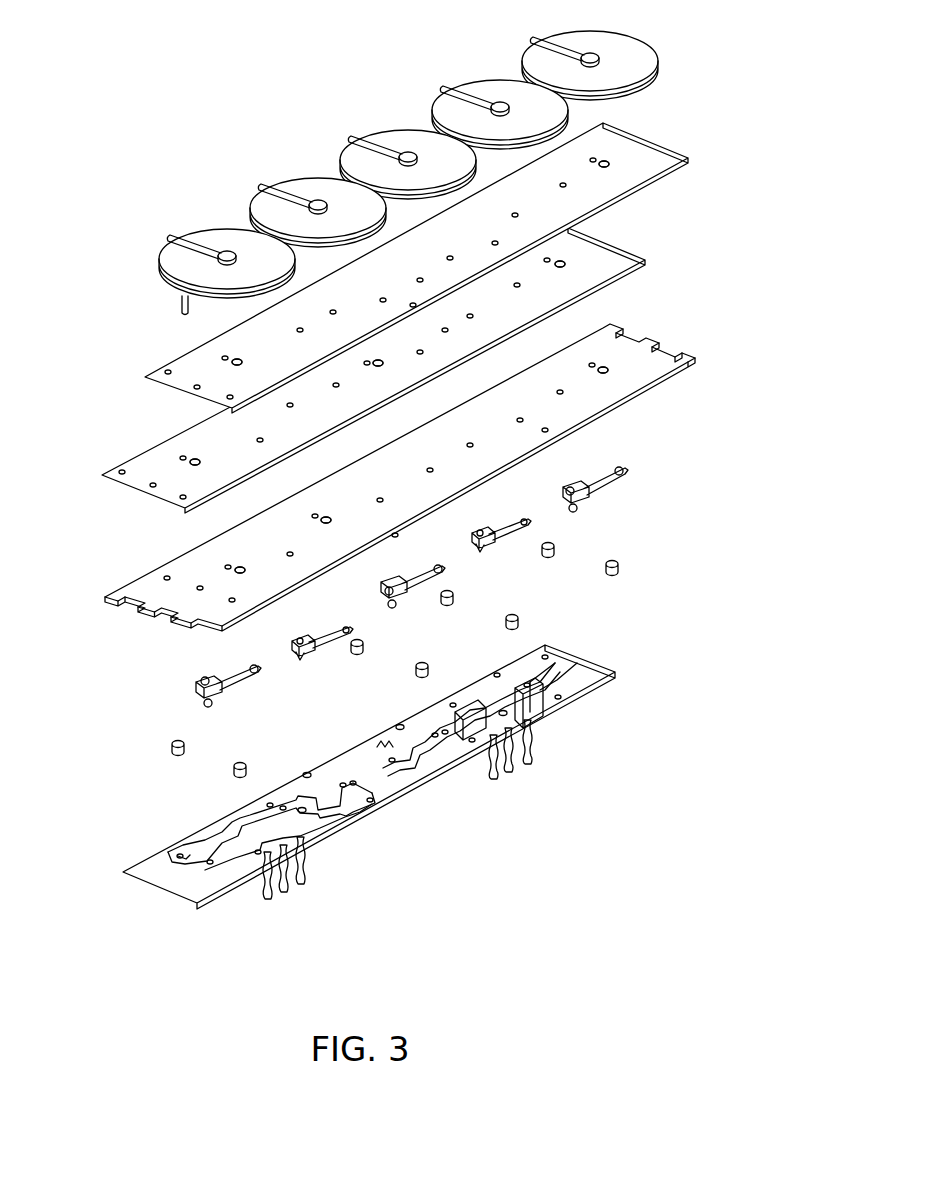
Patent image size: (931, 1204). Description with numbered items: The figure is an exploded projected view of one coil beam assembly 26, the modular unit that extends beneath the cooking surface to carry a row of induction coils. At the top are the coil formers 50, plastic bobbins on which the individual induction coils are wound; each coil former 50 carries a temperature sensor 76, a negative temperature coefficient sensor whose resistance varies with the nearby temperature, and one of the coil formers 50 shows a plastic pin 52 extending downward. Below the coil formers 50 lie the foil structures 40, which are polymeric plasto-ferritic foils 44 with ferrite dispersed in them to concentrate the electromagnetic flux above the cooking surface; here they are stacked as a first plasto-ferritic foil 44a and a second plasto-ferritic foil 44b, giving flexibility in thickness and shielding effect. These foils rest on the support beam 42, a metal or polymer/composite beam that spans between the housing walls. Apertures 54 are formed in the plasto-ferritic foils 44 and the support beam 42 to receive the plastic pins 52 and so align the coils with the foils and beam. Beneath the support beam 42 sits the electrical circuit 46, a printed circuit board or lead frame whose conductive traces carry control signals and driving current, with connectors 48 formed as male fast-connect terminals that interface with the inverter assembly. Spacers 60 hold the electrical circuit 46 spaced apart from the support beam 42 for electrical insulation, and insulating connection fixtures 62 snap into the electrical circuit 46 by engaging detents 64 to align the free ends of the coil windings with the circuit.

The coil beam assembly 26 is at (262, 62).
The foil structures 40 is at (187, 438).
The support beam 42 is at (632, 360).
The plasto-ferritic foils 44 is at (647, 158).
The first plasto-ferritic foil 44a is at (373, 370).
The second plasto-ferritic foil 44b is at (416, 268).
The electrical circuit 46 is at (573, 663).
The connectors 48 is at (527, 765).
The coil formers 50 is at (585, 52).
The plastic pins 52 is at (181, 306).
The apertures 54 is at (563, 183).
The spacers 60 is at (233, 770).
The connection fixture 62 is at (270, 673).
The engaging detents 64 is at (203, 680).
The temperature sensors 76 is at (220, 254).